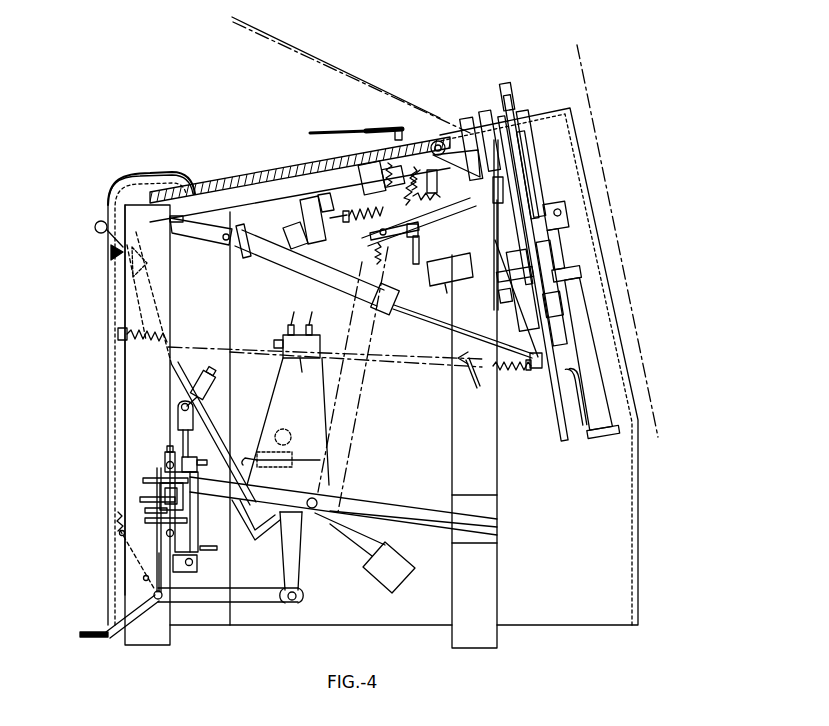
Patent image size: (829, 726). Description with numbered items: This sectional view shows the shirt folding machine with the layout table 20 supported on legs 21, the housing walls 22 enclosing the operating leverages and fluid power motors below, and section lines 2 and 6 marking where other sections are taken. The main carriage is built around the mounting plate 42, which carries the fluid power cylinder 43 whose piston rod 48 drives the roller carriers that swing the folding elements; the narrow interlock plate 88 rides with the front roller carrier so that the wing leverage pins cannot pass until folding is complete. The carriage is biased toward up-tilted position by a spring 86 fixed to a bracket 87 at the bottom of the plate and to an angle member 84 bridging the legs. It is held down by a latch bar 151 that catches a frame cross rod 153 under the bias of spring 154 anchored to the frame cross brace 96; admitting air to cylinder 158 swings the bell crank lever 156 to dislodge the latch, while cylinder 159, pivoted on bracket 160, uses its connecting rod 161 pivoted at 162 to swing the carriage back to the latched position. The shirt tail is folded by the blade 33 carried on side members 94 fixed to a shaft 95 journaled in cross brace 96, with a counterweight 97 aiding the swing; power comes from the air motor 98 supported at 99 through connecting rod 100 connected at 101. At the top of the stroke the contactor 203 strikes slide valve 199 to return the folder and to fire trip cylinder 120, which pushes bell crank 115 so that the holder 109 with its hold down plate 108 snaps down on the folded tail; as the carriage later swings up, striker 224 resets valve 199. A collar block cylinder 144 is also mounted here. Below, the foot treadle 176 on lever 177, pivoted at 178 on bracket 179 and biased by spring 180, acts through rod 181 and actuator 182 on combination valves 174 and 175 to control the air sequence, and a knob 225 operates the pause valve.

The section line 2— 2 is at (584, 51).
The section line 6— 6 is at (346, 430).
The layout table 20 is at (193, 184).
The legs 21 is at (162, 294).
The housing walls 22 is at (110, 427).
The blade 33 is at (151, 181).
The mounting plate 42 is at (518, 196).
The fluid power cylinder 43 is at (607, 427).
The piston rod 48 is at (565, 254).
The angle member 84 is at (118, 334).
The spring 86 is at (507, 370).
The bracket 87 is at (535, 370).
The narrow plate 88 is at (477, 138).
The side members 94 is at (173, 378).
The shaft 95 is at (307, 498).
The frame cross brace 96 is at (402, 507).
The counterweight 97 is at (406, 575).
The air motor 98 is at (194, 534).
The air motor support 99 is at (190, 564).
The connecting rod 100 is at (180, 440).
The connection to folder cross brace 101 is at (178, 407).
The hold down plate 108 is at (368, 129).
The holder 109 is at (320, 131).
The bell crank 115 is at (372, 220).
The power cylinder 120 is at (363, 187).
The fluid power cylinder 144 is at (302, 232).
The latch bar 151 is at (443, 218).
The frame cross rod 153 is at (410, 238).
The spring 154 is at (374, 259).
The bell crank lever 156 is at (416, 231).
The fluid power cylinder 158 is at (441, 274).
The fluid power cylinder 159 is at (320, 282).
The bracket 160 is at (208, 233).
The connecting rod 161 is at (420, 318).
The pivot 162 is at (542, 362).
The combination valve 174 is at (166, 455).
The combination valve 175 is at (150, 522).
The foot treadle 176 is at (85, 631).
The lever 177 is at (218, 596).
The pivot 178 is at (298, 602).
The bracket 179 is at (296, 568).
The spring 180 is at (150, 583).
The rod 181 is at (156, 546).
The actuator 182 is at (146, 498).
The slide valve 199 is at (319, 346).
The tail folding contactor 203 is at (213, 368).
The striker 224 is at (468, 374).
The knob 225 is at (99, 234).